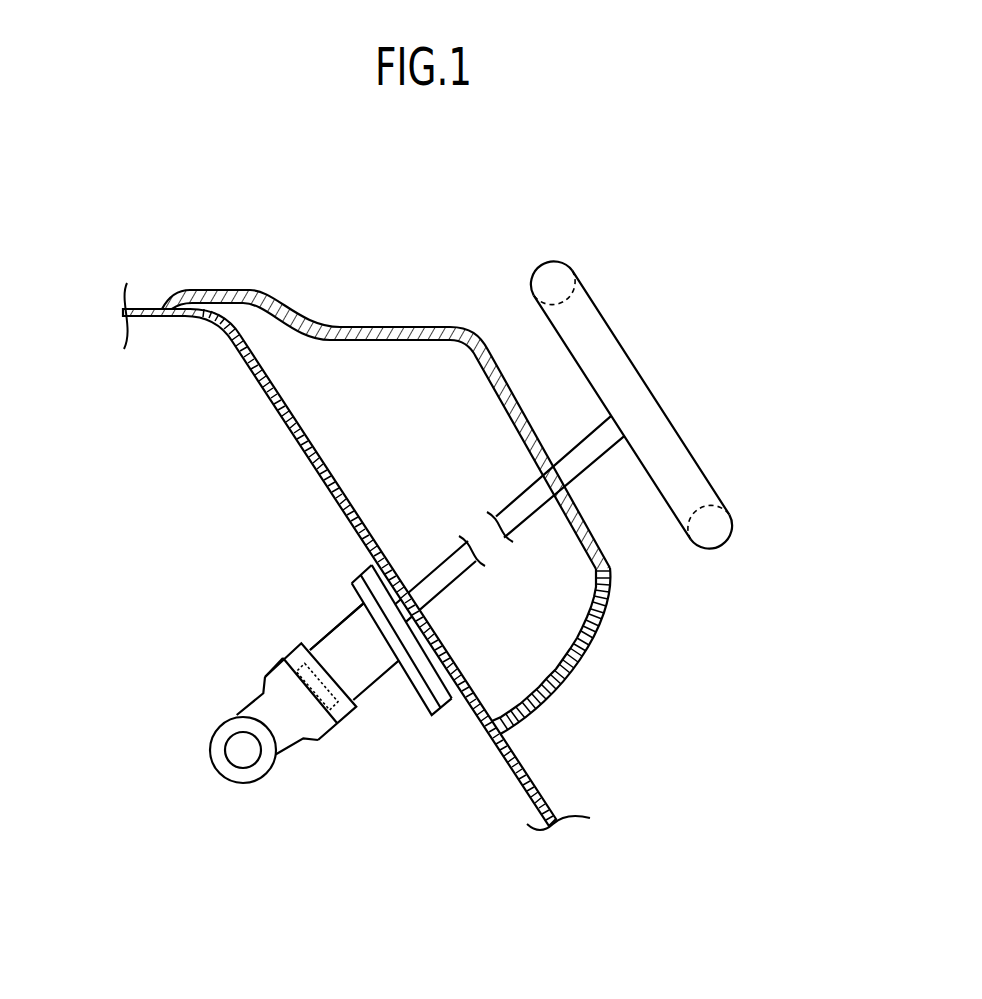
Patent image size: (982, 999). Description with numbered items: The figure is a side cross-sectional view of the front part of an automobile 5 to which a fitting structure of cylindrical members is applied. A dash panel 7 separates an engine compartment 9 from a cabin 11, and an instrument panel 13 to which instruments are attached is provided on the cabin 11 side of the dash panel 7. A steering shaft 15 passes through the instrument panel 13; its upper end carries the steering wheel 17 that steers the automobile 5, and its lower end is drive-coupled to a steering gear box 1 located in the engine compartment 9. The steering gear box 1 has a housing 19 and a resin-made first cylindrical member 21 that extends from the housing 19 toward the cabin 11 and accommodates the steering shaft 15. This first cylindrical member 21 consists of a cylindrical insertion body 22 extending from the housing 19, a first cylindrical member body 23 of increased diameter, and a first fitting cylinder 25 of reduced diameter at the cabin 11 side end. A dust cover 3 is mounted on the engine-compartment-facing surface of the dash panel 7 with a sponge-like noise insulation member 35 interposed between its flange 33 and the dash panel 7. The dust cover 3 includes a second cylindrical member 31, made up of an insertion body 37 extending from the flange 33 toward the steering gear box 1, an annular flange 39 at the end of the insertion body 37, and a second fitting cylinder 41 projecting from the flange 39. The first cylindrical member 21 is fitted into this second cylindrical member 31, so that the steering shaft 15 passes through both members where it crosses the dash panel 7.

The steering gear box 1 is at (220, 774).
The dust cover 3 is at (140, 495).
The automobile 5 is at (458, 243).
The dash panel 7 is at (278, 398).
The engine compartment 9 is at (159, 458).
The cabin 11 is at (801, 578).
The instrument panel 13 is at (354, 324).
The steering shaft 15 is at (507, 517).
The steering wheel 17 is at (607, 312).
The housing 19 is at (266, 777).
The first cylindrical member 21 is at (413, 758).
The insertion body 22 is at (300, 745).
The first cylindrical member body 23 is at (330, 745).
The first fitting cylinder 25 is at (345, 720).
The second cylindrical member 31 is at (192, 542).
The flange 33 is at (349, 582).
The noise insulation member 35 is at (368, 572).
The insertion body 37 is at (338, 626).
The flange 39 is at (306, 641).
The second fitting cylinder 41 is at (302, 648).